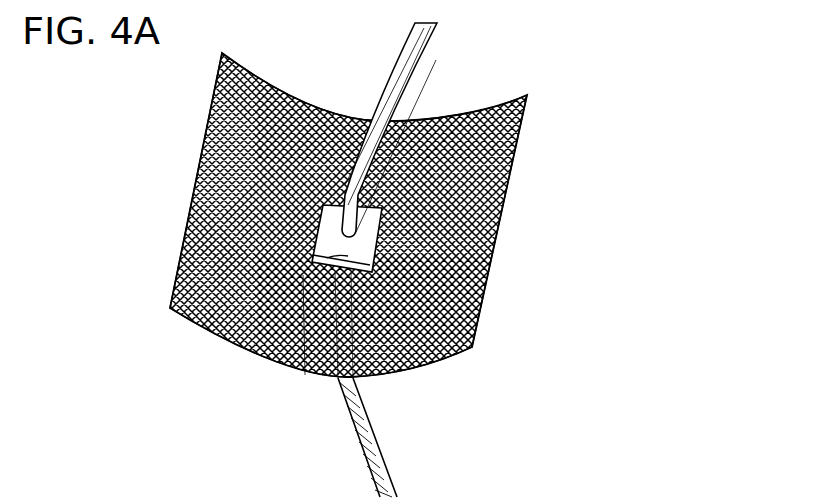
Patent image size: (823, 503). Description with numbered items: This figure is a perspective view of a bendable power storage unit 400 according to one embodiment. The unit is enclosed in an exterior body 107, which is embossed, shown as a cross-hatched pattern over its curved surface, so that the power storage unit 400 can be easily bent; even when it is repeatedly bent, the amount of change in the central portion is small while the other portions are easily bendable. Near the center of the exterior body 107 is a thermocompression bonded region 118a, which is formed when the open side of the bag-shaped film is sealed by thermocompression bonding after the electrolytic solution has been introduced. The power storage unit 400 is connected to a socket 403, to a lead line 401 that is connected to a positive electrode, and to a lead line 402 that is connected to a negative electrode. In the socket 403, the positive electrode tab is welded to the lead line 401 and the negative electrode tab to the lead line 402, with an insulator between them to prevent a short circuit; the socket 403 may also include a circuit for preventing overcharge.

The power storage unit 400 is at (181, 154).
The lead line 401 is at (392, 70).
The lead line 402 is at (389, 475).
The socket 403 is at (305, 375).
The exterior body 107 is at (495, 248).
The thermocompression bonded region 118a is at (463, 358).